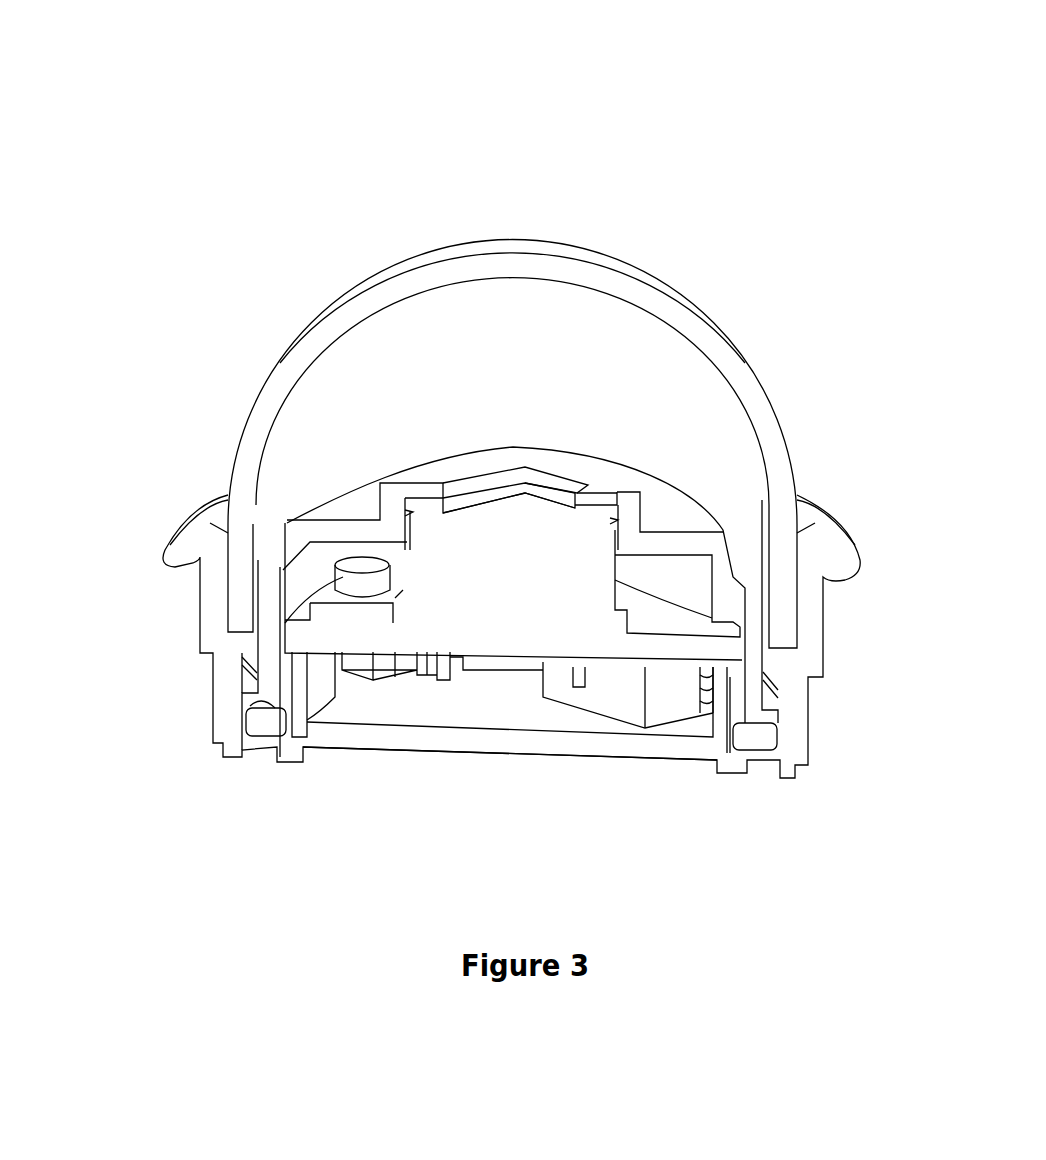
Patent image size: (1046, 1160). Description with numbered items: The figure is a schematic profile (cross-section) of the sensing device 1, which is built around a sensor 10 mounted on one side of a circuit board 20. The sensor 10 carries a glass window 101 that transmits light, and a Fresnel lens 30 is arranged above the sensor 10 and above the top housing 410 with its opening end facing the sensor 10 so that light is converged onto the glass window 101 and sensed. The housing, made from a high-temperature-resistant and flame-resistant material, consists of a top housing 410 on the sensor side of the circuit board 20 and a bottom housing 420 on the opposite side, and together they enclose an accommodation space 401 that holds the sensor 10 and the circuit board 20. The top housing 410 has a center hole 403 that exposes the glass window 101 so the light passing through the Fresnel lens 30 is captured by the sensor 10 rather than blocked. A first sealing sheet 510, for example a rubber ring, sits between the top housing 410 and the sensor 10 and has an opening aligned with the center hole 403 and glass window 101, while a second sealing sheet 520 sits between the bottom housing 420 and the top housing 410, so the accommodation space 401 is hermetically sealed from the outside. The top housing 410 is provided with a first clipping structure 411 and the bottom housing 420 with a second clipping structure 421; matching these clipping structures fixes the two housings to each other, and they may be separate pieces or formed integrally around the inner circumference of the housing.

The sensing device 1 is at (328, 134).
The Fresnel lens 30 is at (613, 263).
The center hole 403 is at (495, 488).
The glass window 101 is at (536, 510).
The first sealing sheet 510 is at (597, 503).
The sensor 10 is at (615, 590).
The circuit board 20 is at (667, 620).
The accommodation space 401 is at (297, 585).
The second clipping structure 421 is at (249, 683).
The first clipping structure 411 is at (262, 698).
The top housing 410 is at (750, 688).
The bottom housing 420 is at (802, 740).
The second sealing sheet 520 is at (750, 743).